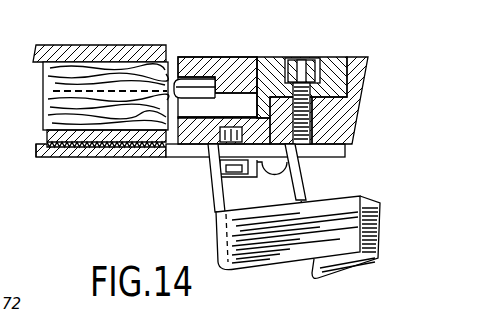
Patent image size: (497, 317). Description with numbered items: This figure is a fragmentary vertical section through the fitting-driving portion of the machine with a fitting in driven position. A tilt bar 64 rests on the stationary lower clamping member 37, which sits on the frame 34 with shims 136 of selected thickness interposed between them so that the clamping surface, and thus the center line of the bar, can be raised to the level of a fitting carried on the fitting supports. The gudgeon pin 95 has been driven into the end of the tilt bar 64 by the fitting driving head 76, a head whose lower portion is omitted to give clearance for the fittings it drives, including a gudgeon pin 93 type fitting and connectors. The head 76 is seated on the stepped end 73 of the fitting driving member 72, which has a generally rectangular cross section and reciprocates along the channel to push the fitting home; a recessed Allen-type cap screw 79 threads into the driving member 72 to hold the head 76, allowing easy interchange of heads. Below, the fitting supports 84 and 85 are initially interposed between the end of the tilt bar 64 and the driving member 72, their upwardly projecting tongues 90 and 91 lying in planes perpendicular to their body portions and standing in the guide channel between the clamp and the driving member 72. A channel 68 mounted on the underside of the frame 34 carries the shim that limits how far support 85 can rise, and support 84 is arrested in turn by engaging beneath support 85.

The gudgeon pin 93 is at (108, 52).
The tilt bar 64 is at (56, 117).
The shims 136 is at (73, 160).
The frame 34 is at (116, 158).
The stationary lower clamping member 37 is at (28, 144).
The stepped end 73 is at (206, 145).
The fitting driving head 76 is at (255, 66).
The fitting driving member 72 is at (350, 59).
The cap screw 79 is at (304, 67).
The gudgeon pin 95 is at (195, 80).
The channel 68 is at (255, 172).
The tongue 91 is at (217, 199).
The tongue 90 is at (302, 181).
The fitting support 84 is at (344, 268).
The fitting support 85 is at (260, 264).